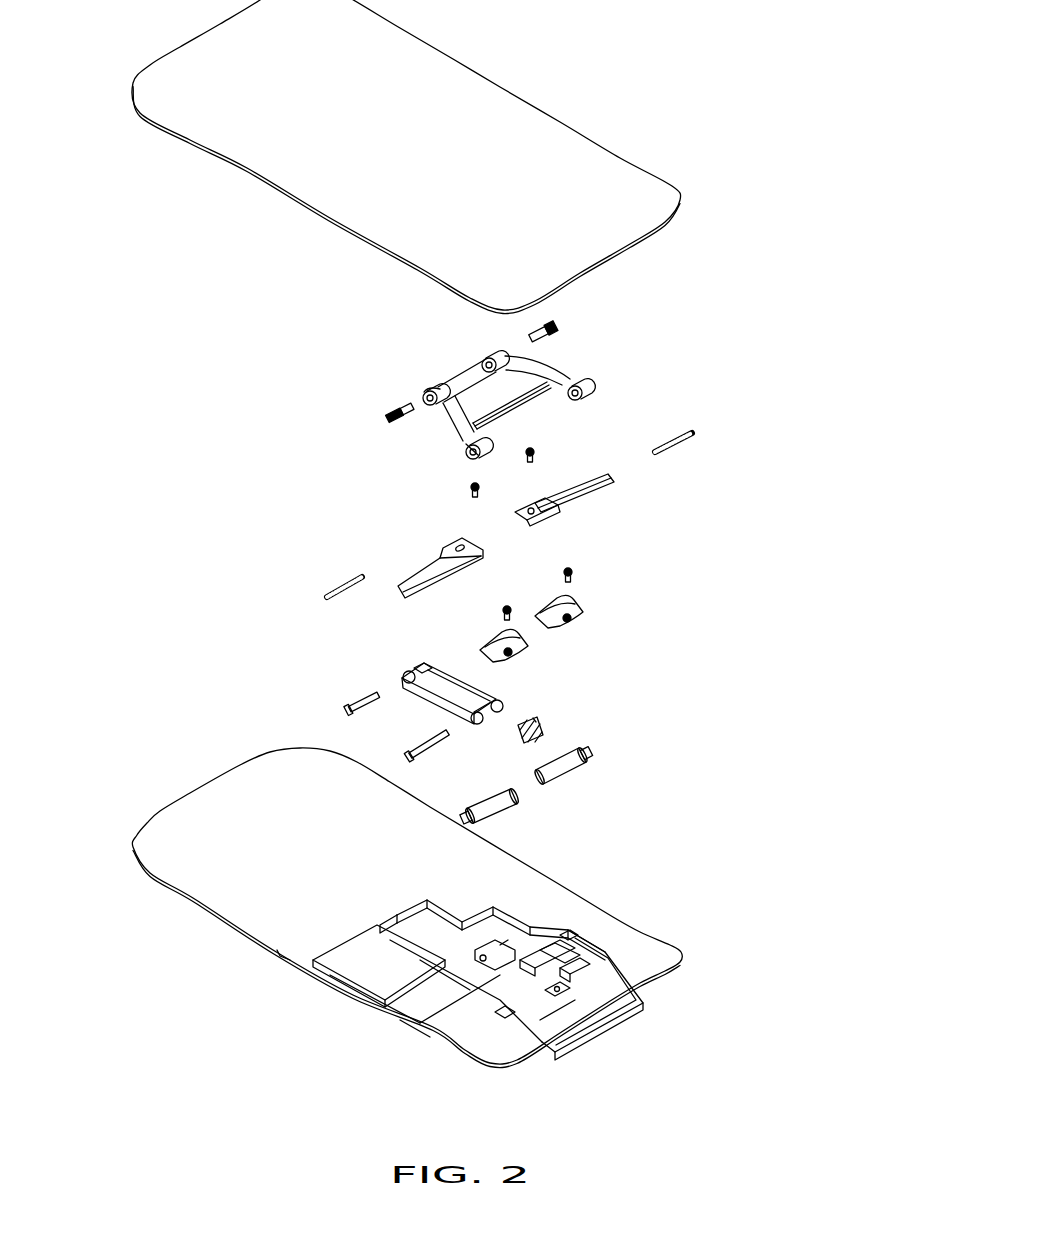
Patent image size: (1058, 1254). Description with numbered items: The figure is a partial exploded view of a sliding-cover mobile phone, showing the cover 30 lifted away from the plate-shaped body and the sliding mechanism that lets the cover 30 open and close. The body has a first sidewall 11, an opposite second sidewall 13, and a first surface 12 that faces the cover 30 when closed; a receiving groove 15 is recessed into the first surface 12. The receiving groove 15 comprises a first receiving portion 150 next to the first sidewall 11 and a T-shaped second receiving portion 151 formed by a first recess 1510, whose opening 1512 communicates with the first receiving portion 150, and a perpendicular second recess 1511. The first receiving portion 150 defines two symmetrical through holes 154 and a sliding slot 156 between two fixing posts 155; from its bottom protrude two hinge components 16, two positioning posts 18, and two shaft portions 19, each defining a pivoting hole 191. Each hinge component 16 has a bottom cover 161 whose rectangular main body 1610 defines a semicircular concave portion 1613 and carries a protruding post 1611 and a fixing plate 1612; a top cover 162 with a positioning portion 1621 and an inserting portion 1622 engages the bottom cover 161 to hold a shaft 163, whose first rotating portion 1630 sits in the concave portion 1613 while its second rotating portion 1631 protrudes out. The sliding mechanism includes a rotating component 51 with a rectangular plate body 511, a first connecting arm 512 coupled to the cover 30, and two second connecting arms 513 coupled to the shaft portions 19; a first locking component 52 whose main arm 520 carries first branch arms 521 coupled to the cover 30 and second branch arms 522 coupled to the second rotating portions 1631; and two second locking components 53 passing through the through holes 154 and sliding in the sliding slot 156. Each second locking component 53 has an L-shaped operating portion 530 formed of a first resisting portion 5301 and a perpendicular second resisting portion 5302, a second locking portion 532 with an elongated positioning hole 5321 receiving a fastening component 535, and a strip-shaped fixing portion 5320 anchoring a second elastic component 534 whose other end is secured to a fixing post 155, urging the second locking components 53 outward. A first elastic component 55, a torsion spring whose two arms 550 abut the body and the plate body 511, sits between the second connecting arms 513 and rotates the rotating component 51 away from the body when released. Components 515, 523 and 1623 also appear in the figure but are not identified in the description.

The first sidewall 11 is at (493, 1067).
The first surface 12 is at (205, 863).
The second sidewall 13 is at (187, 793).
The receiving groove 15 is at (533, 1037).
The hinge component 16 is at (812, 597).
The positioning post 18 is at (405, 1020).
The shaft portion 19 is at (500, 912).
The cover 30 is at (533, 138).
The rotating component 51 is at (372, 610).
The first locking component 52 is at (395, 528).
The second locking component 53 is at (783, 393).
The first elastic component 55 is at (540, 725).
The first receiving portion 150 is at (557, 1017).
The second receiving portion 151 is at (240, 1027).
The through hole 154 is at (580, 940).
The fixing post 155 is at (567, 932).
The sliding slot 156 is at (500, 1017).
The bottom cover 161 is at (763, 920).
The top cover 162 is at (580, 597).
The shaft 163 is at (752, 745).
The pivoting hole 191 is at (527, 927).
The plate body 511 is at (457, 683).
The first connecting arm 512 is at (412, 670).
The second connecting arm 513 is at (468, 710).
The hinge pin 515 is at (370, 717).
The main arm 520 is at (467, 403).
The first branch arm 521 is at (437, 402).
The second branch arm 522 is at (467, 437).
The pivot pin 523 is at (562, 325).
The operating portion 530 is at (718, 470).
The second locking portion 532 is at (530, 532).
The second elastic component 534 is at (690, 430).
The fastening component 535 is at (535, 443).
The arm 550 is at (490, 752).
The first recess 1510 is at (483, 983).
The second recess 1511 is at (457, 957).
The opening 1512 is at (487, 907).
The main body 1610 is at (600, 1030).
The protruding post 1611 is at (572, 973).
The fixing plate 1612 is at (555, 993).
The concave portion 1613 is at (565, 937).
The positioning portion 1621 is at (577, 620).
The inserting portion 1622 is at (540, 605).
The hook screw 1623 is at (575, 572).
The first rotating portion 1630 is at (573, 780).
The second rotating portion 1631 is at (590, 760).
The first resisting portion 5301 is at (610, 473).
The second resisting portion 5302 is at (603, 498).
The fixing portion 5320 is at (532, 525).
The positioning hole 5321 is at (535, 508).